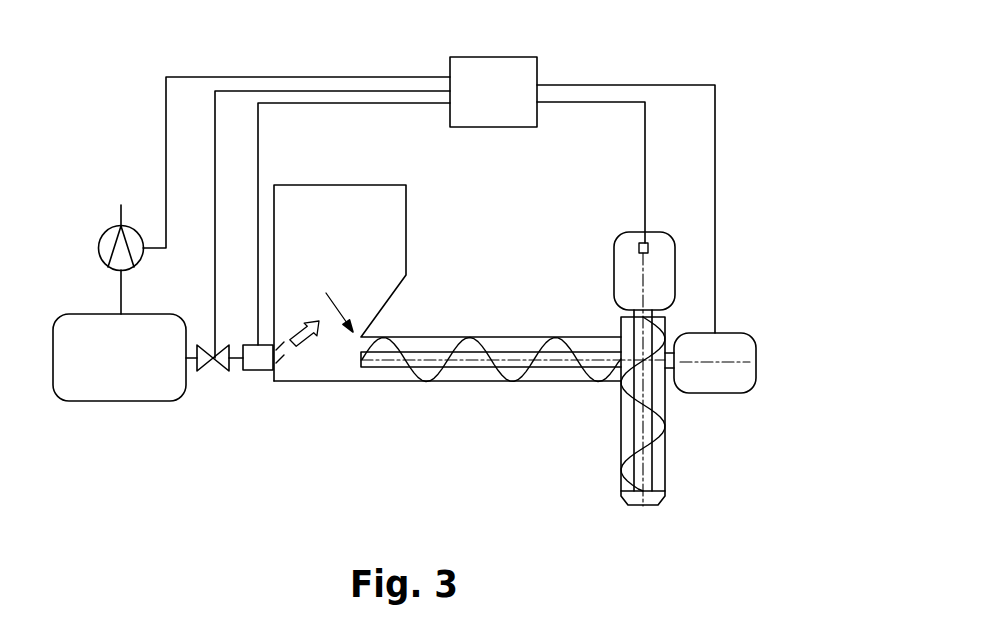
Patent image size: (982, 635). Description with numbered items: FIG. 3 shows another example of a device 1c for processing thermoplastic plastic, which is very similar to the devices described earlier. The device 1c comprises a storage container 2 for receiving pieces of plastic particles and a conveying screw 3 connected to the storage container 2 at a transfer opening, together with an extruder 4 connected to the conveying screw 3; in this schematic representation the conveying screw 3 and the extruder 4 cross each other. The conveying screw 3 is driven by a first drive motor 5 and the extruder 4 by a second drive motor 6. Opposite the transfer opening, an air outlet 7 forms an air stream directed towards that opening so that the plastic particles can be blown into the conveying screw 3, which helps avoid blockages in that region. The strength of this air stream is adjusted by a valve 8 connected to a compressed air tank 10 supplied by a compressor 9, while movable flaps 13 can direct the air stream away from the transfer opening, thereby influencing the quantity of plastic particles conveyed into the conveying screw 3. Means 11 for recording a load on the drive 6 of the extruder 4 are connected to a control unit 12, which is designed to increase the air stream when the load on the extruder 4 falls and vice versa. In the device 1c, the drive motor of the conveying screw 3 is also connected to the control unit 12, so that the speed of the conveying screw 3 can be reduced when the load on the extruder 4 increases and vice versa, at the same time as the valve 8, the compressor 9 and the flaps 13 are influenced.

The device 1c is at (435, 265).
The storage container 2 is at (395, 238).
The conveying screw 3 is at (478, 338).
The extruder 4 is at (653, 457).
The first drive motor 5 is at (723, 390).
The second drive motor 6 is at (622, 277).
The air outlet 7 is at (263, 364).
The valve 8 is at (223, 368).
The compressor 9 is at (107, 253).
The compressed air tank 10 is at (115, 392).
The means for recording a load 11 is at (640, 244).
The control unit 12 is at (528, 80).
The movable flaps 13 is at (280, 368).